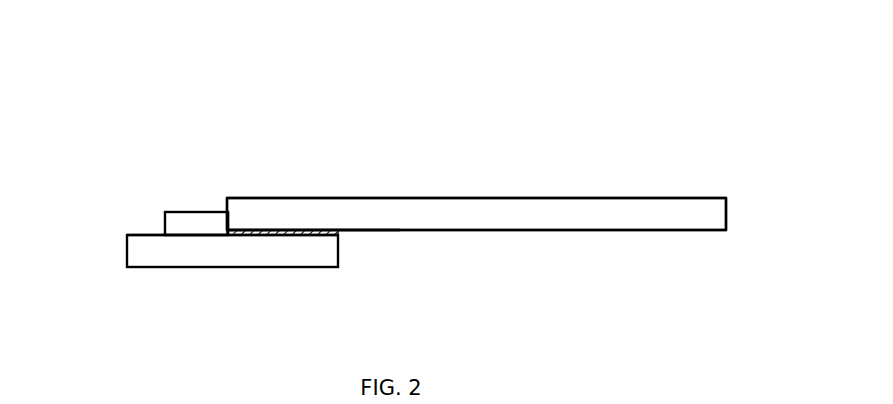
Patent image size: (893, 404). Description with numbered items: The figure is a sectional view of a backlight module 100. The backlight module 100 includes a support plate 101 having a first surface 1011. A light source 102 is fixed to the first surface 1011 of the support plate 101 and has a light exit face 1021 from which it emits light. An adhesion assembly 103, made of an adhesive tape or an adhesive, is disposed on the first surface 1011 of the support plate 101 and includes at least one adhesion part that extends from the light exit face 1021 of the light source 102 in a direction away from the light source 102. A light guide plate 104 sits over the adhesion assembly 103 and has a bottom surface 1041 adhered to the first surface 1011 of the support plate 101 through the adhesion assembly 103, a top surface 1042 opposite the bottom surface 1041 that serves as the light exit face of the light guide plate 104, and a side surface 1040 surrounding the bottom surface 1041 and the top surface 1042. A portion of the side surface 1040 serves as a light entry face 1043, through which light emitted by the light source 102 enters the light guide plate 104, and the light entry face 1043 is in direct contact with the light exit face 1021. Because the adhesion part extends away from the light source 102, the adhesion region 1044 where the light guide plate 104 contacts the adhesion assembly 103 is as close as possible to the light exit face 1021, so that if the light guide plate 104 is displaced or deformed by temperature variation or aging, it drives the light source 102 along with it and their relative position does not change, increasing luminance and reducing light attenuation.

The backlight module 100 is at (115, 66).
The support plate 101 is at (300, 252).
The first surface 1011 is at (133, 234).
The light source 102 is at (188, 223).
The light exit face 1021 is at (228, 225).
The adhesion assembly 103 is at (273, 234).
The light guide plate 104 is at (663, 208).
The side surface 1040 is at (726, 230).
The bottom surface 1041 is at (573, 230).
The top surface 1042 is at (492, 198).
The light entry face 1043 is at (230, 218).
The adhesion region 1044 is at (232, 224).